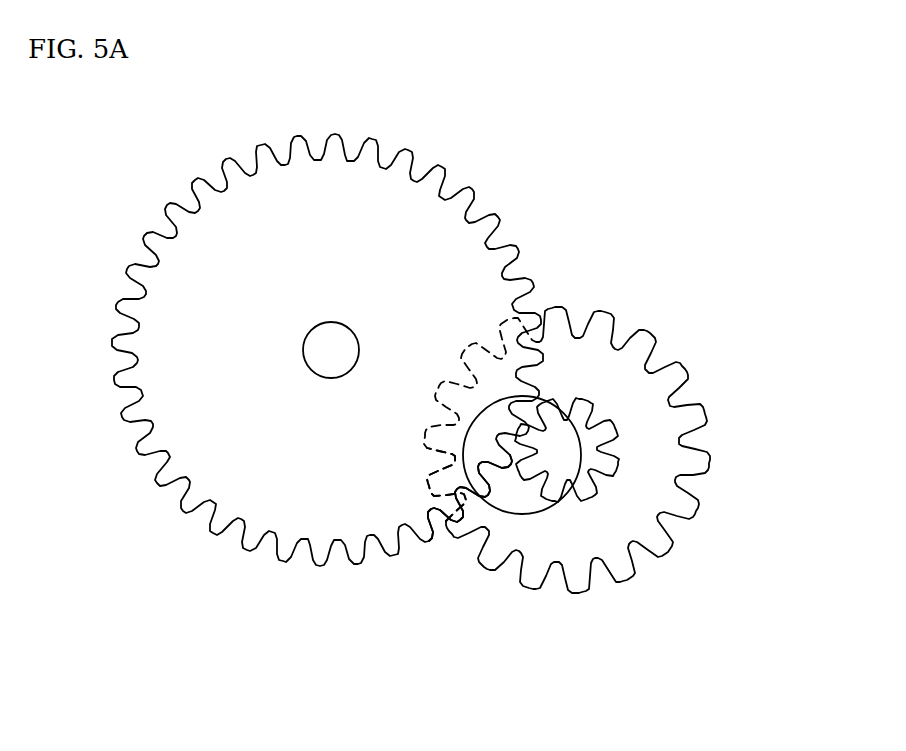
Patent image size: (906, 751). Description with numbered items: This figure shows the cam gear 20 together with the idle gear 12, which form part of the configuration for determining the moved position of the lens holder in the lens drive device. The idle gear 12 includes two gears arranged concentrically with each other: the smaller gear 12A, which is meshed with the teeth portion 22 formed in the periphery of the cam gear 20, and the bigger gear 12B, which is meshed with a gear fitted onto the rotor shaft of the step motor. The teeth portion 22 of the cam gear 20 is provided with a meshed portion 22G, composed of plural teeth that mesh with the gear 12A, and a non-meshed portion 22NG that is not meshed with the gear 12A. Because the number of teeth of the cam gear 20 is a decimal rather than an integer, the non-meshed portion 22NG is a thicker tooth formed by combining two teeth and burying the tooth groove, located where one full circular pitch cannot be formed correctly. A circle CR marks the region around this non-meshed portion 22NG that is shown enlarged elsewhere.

The cam gear 20 is at (237, 217).
The idle gear 12 is at (602, 436).
The gear 12A is at (577, 412).
The gear 12B is at (657, 410).
The circle CR is at (543, 510).
The teeth portion 22 is at (442, 560).
The meshed portion 22G is at (385, 552).
The non-meshed portion 22NG is at (507, 467).